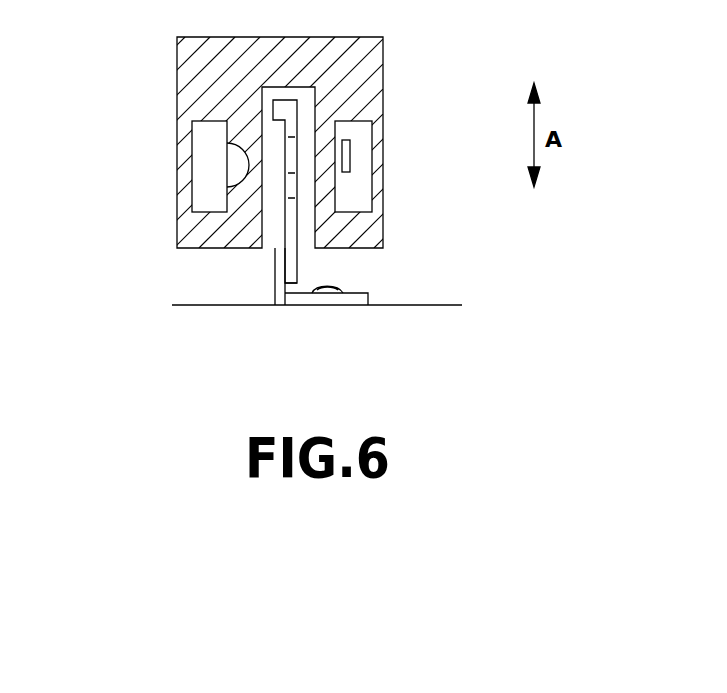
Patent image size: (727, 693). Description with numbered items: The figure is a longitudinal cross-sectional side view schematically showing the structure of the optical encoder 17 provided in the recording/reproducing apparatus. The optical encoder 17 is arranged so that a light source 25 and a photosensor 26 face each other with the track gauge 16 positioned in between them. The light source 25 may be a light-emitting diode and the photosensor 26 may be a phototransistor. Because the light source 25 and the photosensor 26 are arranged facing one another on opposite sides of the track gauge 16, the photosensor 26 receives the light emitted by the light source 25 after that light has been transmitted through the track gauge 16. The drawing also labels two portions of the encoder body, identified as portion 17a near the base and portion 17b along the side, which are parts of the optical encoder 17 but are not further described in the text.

The optical encoder 17 is at (376, 53).
The track gauge 16 is at (290, 112).
The light source 25 is at (205, 145).
The photosensor 26 is at (370, 150).
The bracket base leg 17a is at (266, 236).
The bracket vertical leg 17b is at (315, 235).